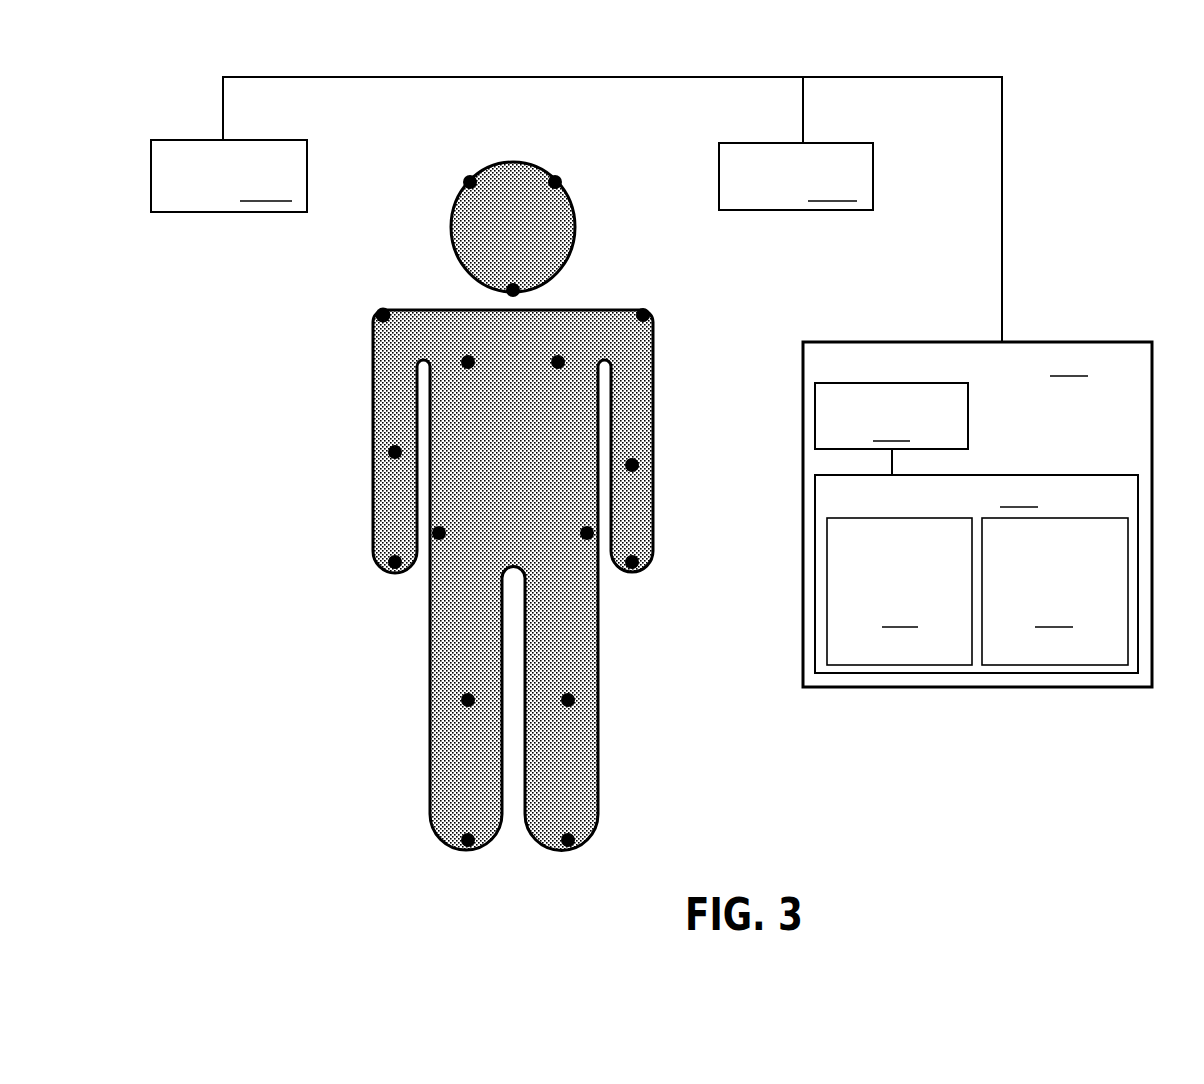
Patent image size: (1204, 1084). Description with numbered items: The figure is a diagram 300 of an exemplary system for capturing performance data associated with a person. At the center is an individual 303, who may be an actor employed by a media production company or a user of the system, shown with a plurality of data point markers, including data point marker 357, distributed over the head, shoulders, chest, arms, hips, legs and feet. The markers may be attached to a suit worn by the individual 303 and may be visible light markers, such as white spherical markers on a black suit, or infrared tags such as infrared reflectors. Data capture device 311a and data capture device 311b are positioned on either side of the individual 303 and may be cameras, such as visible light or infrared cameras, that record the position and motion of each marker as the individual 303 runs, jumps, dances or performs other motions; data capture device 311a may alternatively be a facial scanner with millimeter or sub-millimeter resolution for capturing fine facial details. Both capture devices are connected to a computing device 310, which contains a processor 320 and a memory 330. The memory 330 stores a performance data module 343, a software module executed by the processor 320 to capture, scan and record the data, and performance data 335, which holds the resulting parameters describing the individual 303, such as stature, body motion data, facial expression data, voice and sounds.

The diagram 300 is at (1145, 135).
The individual 303 is at (360, 656).
The data point marker 357 is at (380, 310).
The data capture device 311a is at (229, 176).
The data capture device 311b is at (796, 176).
The computing device 310 is at (977, 514).
The processor 320 is at (891, 416).
The memory 330 is at (976, 574).
The performance data module 343 is at (899, 591).
The performance data 335 is at (1055, 591).